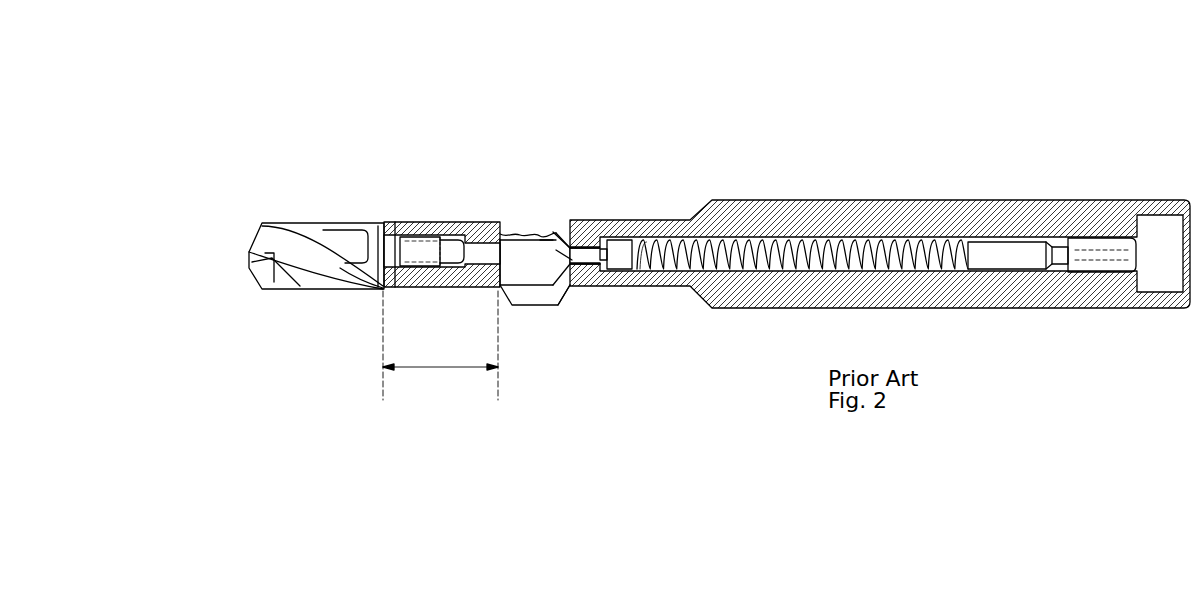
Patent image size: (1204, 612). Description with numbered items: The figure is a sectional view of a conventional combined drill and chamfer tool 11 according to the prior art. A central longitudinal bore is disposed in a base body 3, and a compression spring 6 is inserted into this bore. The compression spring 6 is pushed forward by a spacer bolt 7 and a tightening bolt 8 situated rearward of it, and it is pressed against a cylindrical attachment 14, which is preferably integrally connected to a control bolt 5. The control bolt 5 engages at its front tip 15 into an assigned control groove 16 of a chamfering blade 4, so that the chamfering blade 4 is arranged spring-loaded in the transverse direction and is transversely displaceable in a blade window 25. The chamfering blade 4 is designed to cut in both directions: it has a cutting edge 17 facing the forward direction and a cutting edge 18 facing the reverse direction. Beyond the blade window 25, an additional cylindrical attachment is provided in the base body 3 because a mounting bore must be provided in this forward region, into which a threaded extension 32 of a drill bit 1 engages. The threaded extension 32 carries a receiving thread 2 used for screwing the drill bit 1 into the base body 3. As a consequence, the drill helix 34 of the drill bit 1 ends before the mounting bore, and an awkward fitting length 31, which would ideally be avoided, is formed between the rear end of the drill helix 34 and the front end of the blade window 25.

The drill bit 1 is at (283, 246).
The receiving thread 2 is at (431, 240).
The base body 3 is at (468, 220).
The chamfering blade 4 is at (512, 235).
The control bolt 5 is at (602, 252).
The compression spring 6 is at (768, 247).
The spacer bolt 7 is at (1046, 245).
The tightening bolt 8 is at (1110, 252).
The combined drill and chamfer tool 11 is at (742, 105).
The cylindrical attachment 14 is at (626, 248).
The front tip 15 is at (560, 256).
The control groove 16 is at (552, 240).
The cutting edge 17 is at (503, 295).
The cutting edge 18 is at (566, 294).
The blade window 25 is at (567, 231).
The fitting length 31 is at (439, 368).
The threaded extension 32 is at (393, 243).
The drill helix 34 is at (357, 272).